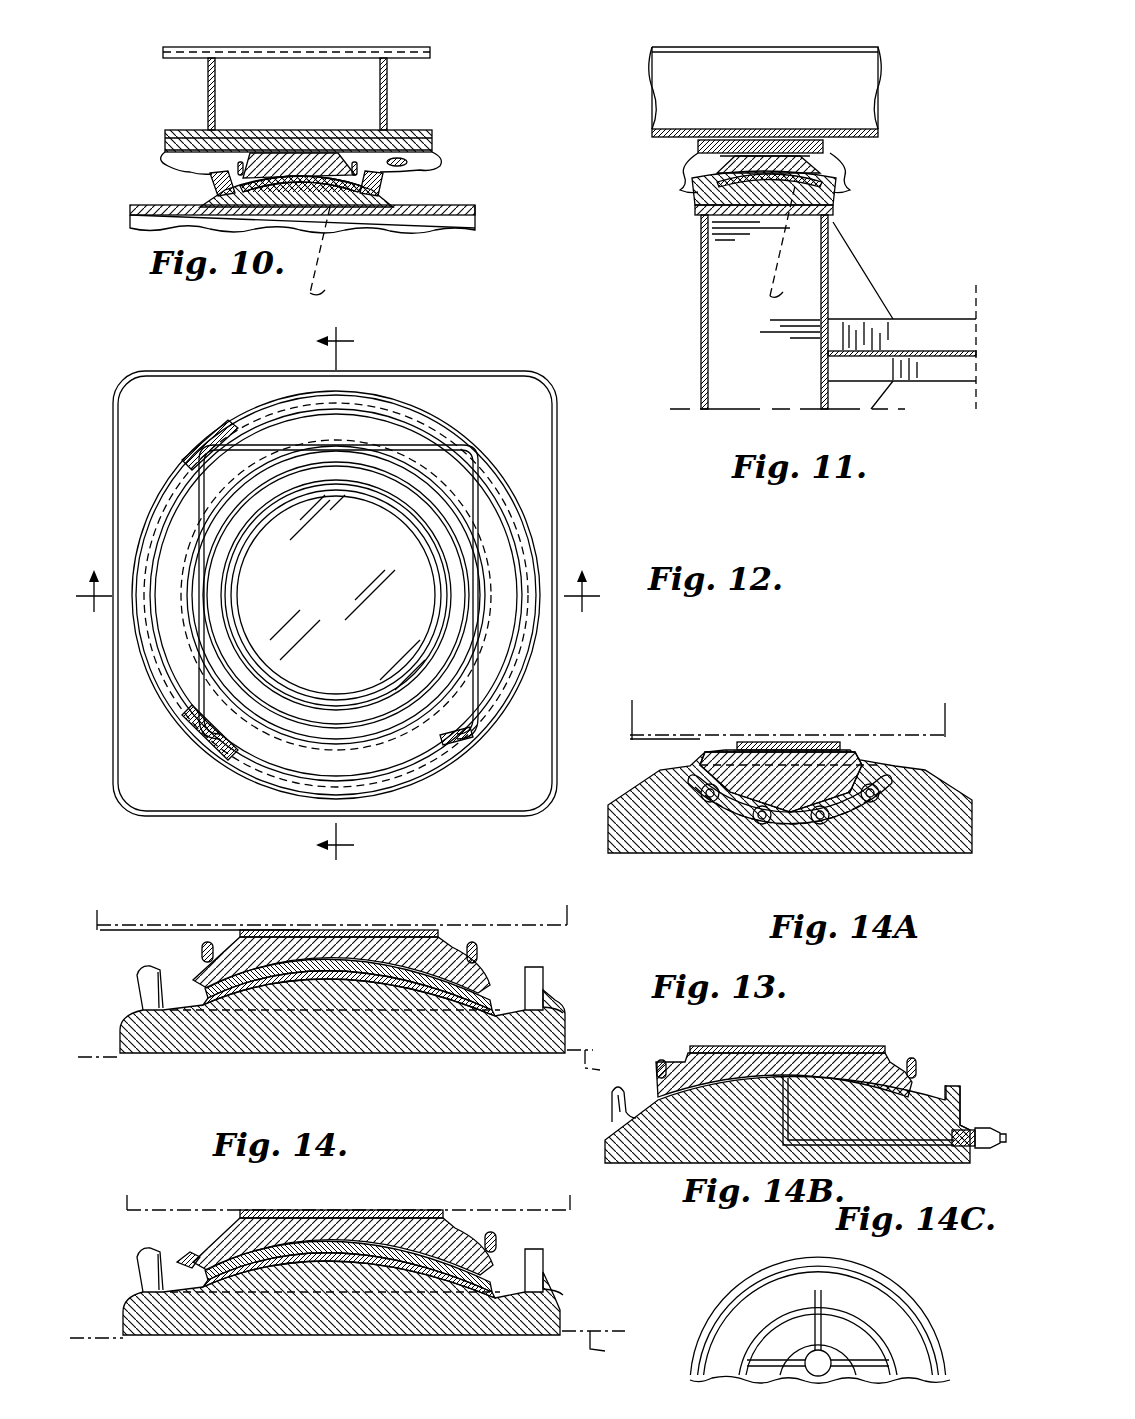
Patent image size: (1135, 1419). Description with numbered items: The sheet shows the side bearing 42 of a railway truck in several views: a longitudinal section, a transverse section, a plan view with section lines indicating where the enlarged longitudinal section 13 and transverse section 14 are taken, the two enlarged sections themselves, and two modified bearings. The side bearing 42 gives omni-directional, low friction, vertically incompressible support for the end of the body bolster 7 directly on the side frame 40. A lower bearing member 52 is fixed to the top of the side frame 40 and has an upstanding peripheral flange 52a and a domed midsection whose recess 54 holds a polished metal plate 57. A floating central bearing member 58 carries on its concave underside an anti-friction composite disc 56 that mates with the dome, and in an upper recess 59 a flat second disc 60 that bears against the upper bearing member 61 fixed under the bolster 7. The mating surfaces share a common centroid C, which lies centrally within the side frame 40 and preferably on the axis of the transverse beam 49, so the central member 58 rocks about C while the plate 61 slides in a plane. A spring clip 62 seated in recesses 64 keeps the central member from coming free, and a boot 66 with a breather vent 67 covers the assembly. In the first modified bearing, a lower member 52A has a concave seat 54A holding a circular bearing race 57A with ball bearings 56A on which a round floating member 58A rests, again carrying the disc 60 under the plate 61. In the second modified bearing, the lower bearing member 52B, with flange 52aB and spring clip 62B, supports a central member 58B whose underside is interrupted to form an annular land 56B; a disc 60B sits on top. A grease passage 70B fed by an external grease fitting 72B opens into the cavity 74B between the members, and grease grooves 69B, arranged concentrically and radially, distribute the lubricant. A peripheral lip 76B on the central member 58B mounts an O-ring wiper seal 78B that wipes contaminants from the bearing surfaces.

In FIG. 10, the body bolster 7 is at (398, 48).
In FIG. 11, the body bolster 7 is at (870, 110).
In FIG. 13, the body bolster 7 is at (95, 908).
In FIG. 14, the body bolster 7 is at (125, 1208).
In FIG. 14A, the body bolster 7 is at (633, 712).
In FIG. 10, the side frame 40 is at (470, 207).
In FIG. 11, the side frame 40 is at (833, 210).
In FIG. 13, the side frame 40 is at (353, 1067).
In FIG. 14, the side frame 40 is at (357, 1349).
In FIG. 14A, the side frame 40 is at (985, 798).
In FIG. 14B, the side frame 40 is at (592, 1084).
In FIG. 10, the side bearing 42 is at (150, 184).
In FIG. 11, the side bearing 42 is at (668, 205).
In FIG. 13, the side bearing 42 is at (548, 940).
In FIG. 14, the side bearing 42 is at (558, 1224).
In FIG. 11, the main transverse beam 49 is at (936, 351).
In FIG. 12, the lower bearing member 52 is at (540, 433).
In FIG. 13, the lower bearing member 52 is at (553, 1016).
In FIG. 14, the lower bearing member 52 is at (555, 1318).
In FIG. 12, the upstanding peripheral flange 52a is at (530, 531).
In FIG. 13, the upstanding peripheral flange 52a is at (490, 968).
In FIG. 14, the upstanding peripheral flange 52a is at (545, 1252).
In FIG. 14A, the lower member 52A is at (692, 853).
In FIG. 14B, the upstanding peripheral flange 52aB is at (614, 1100).
In FIG. 14B, the lower bearing member 52B is at (605, 1133).
In FIG. 13, the recess 54 is at (205, 1005).
In FIG. 14, the recess 54 is at (205, 1287).
In FIG. 14A, the concave seat 54A is at (742, 800).
In FIG. 13, the anti-friction composite disc 56 is at (322, 960).
In FIG. 14, the anti-friction composite disc 56 is at (365, 1240).
In FIG. 14A, the ball bearings 56A is at (800, 824).
In FIG. 14C, the annular land 56B is at (752, 1302).
In FIG. 13, the metal plate 57 is at (360, 976).
In FIG. 14, the metal plate 57 is at (350, 1257).
In FIG. 14A, the circular bearing race 57A is at (856, 806).
In FIG. 12, the floating central bearing member 58 is at (394, 724).
In FIG. 13, the floating central bearing member 58 is at (240, 950).
In FIG. 14, the floating central bearing member 58 is at (240, 1230).
In FIG. 14A, the floating central member 58A is at (735, 745).
In FIG. 14B, the floating central bearing member 58B is at (900, 1060).
In FIG. 14C, the floating central bearing member 58B is at (752, 1255).
In FIG. 14, the recess 59 is at (275, 1213).
In FIG. 12, the second anti-friction composite disc 60 is at (352, 579).
In FIG. 13, the second anti-friction composite disc 60 is at (395, 930).
In FIG. 14, the second anti-friction composite disc 60 is at (400, 1210).
In FIG. 14A, the second anti-friction composite disc 60 is at (822, 742).
In FIG. 14B, the anti-friction composite disc 60B is at (822, 1046).
In FIG. 13, the upper bearing member 61 is at (520, 912).
In FIG. 14, the upper bearing member 61 is at (520, 1195).
In FIG. 14A, the upper bearing member 61 is at (668, 745).
In FIG. 12, the spring clip 62 is at (258, 445).
In FIG. 13, the spring clip 62 is at (205, 944).
In FIG. 14, the spring clip 62 is at (490, 1232).
In FIG. 14B, the spring clip 62B is at (680, 1044).
In FIG. 12, the recesses 64 is at (480, 690).
In FIG. 14, the recesses 64 is at (182, 1262).
In FIG. 10, the boot 66 is at (440, 164).
In FIG. 11, the boot 66 is at (688, 172).
In FIG. 10, the breather vent 67 is at (403, 160).
In FIG. 11, the breather vent 67 is at (760, 148).
In FIG. 14C, the grease grooves 69B is at (846, 1348).
In FIG. 14B, the grease passage 70B is at (890, 1150).
In FIG. 14B, the grease fitting 72B is at (978, 1150).
In FIG. 14B, the cavity 74B is at (754, 1046).
In FIG. 14B, the peripheral lip 76B is at (905, 1099).
In FIG. 14B, the O-ring wiper seal 78B is at (952, 1100).
In FIG. 14C, the O-ring wiper seal 78B is at (936, 1338).
In FIG. 12, the section line 13- 13 is at (335, 601).
In FIG. 12, the section line 14- 14 is at (343, 593).
In FIG. 10, the common centroid C is at (325, 254).
In FIG. 11, the common centroid C is at (785, 241).